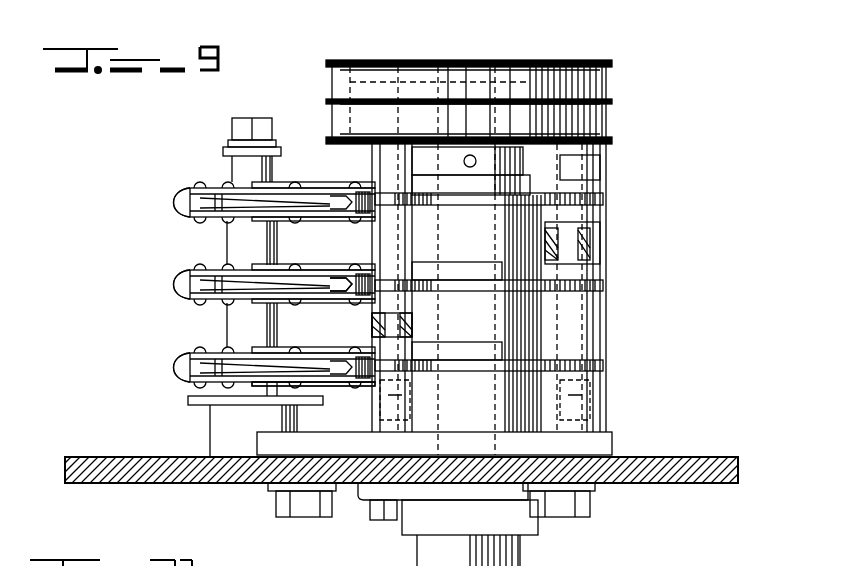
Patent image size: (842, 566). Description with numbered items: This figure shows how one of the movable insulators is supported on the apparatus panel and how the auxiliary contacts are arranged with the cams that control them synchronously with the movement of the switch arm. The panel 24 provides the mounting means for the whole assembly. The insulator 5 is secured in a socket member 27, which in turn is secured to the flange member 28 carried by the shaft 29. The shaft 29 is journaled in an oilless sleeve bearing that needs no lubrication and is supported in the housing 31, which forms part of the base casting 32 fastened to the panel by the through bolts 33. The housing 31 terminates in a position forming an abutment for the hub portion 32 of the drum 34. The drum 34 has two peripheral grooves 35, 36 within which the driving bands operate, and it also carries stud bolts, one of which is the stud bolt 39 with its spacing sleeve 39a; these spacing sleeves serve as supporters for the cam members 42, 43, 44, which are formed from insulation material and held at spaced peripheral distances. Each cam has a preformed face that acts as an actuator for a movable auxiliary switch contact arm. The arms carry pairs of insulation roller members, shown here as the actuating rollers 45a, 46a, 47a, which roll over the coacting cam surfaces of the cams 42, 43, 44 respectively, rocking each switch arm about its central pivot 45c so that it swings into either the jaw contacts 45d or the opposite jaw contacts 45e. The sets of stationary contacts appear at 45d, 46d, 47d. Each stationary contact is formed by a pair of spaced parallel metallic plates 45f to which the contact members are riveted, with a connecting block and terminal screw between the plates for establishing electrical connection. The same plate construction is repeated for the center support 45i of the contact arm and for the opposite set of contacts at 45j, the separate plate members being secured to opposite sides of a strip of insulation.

The insulator 5 is at (518, 550).
The panel 24 is at (118, 486).
The socket member 27 is at (420, 527).
The flange member 28 is at (380, 493).
The shaft 29 is at (460, 87).
The housing 31 is at (512, 228).
The base casting 32 is at (557, 153).
The through bolts 33 is at (275, 500).
The drum 34 is at (550, 60).
The peripheral groove 35 is at (612, 82).
The peripheral groove 36 is at (612, 120).
The stud bolt 39 is at (573, 248).
The spacing sleeve 39a is at (592, 168).
The cam member 42 is at (605, 200).
The cam member 43 is at (605, 283).
The cam member 44 is at (605, 365).
The roller member 45a is at (378, 187).
The central pivot 45c is at (267, 228).
The stationary contacts 45d is at (327, 183).
The stationary contacts 45e is at (260, 405).
The metallic plates 45f is at (182, 353).
The center support 45i is at (178, 370).
The contact support 45j is at (172, 202).
The roller member 46a is at (380, 278).
The stationary contacts 46d is at (197, 305).
The roller member 47a is at (380, 360).
The stationary contacts 47d is at (192, 404).